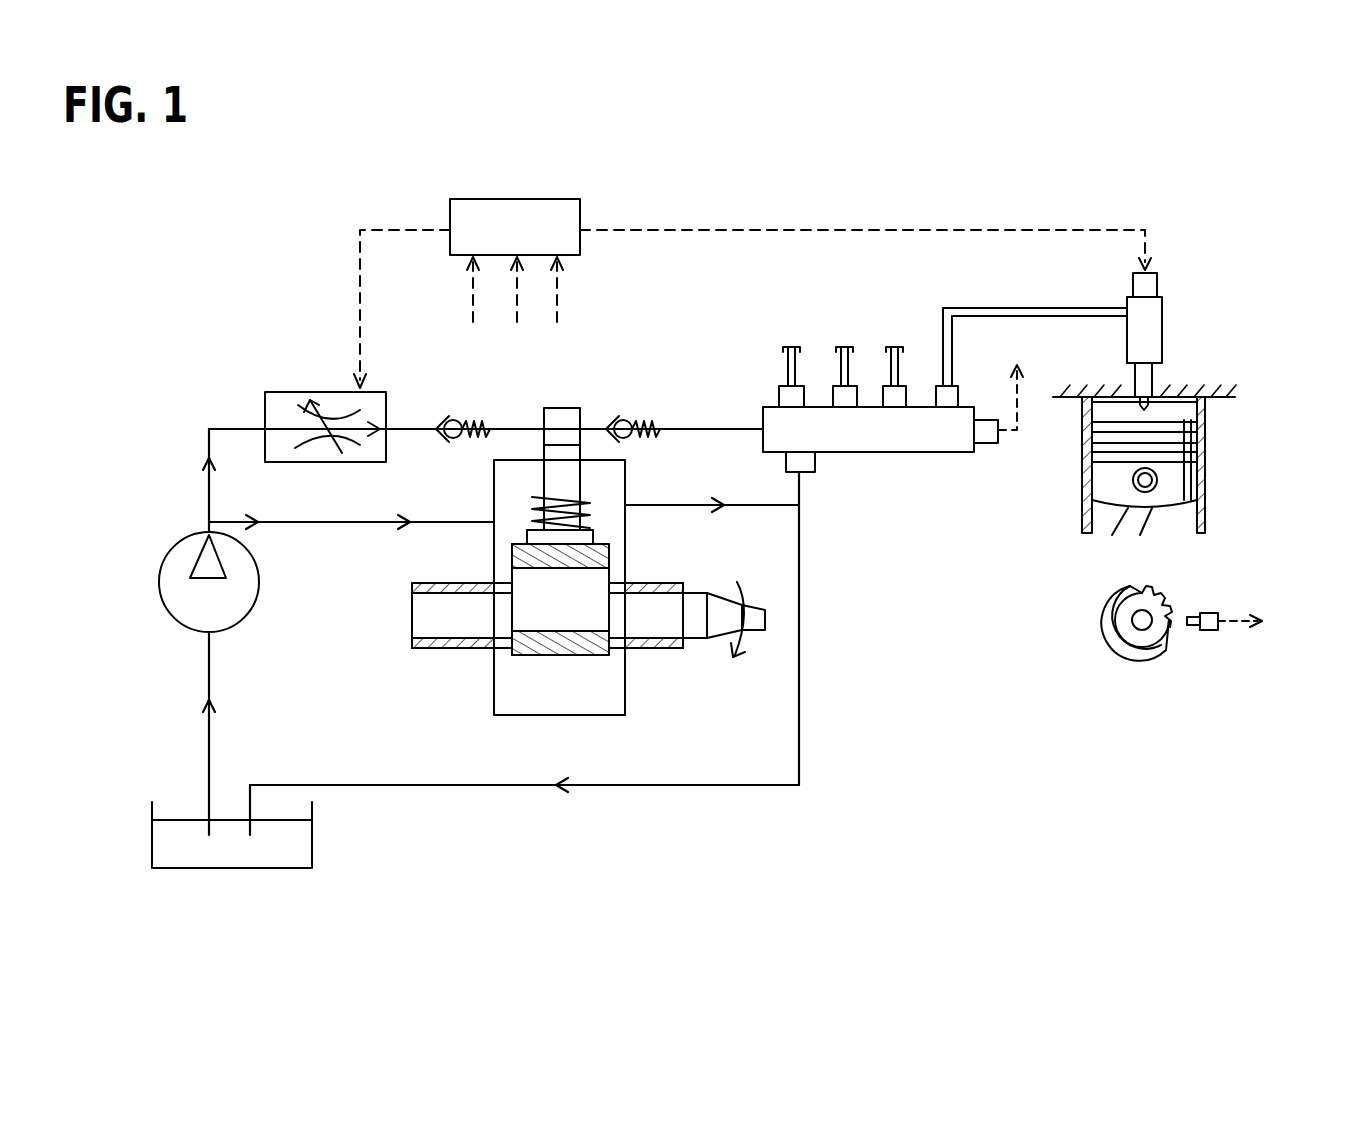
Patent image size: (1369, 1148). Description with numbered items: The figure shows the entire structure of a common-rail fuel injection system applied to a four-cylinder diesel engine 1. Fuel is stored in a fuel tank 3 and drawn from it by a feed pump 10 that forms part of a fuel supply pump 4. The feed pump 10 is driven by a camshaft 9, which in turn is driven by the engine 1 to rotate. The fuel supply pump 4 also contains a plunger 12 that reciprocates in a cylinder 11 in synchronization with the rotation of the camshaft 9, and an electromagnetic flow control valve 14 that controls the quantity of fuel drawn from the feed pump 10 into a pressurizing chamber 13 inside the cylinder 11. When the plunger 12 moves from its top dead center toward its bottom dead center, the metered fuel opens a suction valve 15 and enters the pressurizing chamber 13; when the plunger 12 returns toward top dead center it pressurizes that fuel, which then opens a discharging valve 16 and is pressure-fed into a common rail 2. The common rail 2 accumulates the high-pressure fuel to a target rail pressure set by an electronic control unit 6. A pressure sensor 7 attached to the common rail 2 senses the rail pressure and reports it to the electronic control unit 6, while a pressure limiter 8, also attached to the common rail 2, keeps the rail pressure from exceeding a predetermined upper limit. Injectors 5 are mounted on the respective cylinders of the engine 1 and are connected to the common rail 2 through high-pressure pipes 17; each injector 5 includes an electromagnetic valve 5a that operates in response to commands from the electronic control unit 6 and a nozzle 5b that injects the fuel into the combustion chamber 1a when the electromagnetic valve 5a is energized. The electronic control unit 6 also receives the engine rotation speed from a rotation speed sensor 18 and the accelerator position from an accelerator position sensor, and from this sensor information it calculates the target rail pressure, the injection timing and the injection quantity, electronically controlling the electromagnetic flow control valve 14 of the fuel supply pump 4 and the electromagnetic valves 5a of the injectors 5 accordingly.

The engine 1 is at (1157, 419).
The combustion chamber 1a is at (1185, 413).
The common rail 2 is at (907, 447).
The fuel tank 3 is at (290, 870).
The fuel supply pump 4 is at (473, 673).
The injector 5 is at (1170, 333).
The electromagnetic valve 5a is at (1150, 283).
The nozzle 5b is at (1150, 376).
The electronic control unit 6 is at (513, 209).
The pressure sensor 7 is at (986, 441).
The pressure limiter 8 is at (819, 465).
The camshaft 9 is at (415, 625).
The feed pump 10 is at (185, 622).
The cylinder 11 is at (580, 492).
The plunger 12 is at (550, 478).
The pressurizing chamber 13 is at (558, 410).
The electromagnetic flow control valve 14 is at (287, 392).
The suction valve 15 is at (462, 417).
The discharging valve 16 is at (633, 418).
The high-pressure pipe 17 is at (1017, 307).
The rotation speed sensor 18 is at (1213, 613).